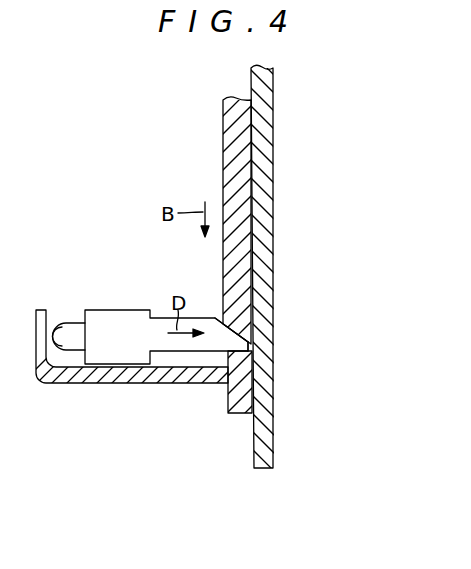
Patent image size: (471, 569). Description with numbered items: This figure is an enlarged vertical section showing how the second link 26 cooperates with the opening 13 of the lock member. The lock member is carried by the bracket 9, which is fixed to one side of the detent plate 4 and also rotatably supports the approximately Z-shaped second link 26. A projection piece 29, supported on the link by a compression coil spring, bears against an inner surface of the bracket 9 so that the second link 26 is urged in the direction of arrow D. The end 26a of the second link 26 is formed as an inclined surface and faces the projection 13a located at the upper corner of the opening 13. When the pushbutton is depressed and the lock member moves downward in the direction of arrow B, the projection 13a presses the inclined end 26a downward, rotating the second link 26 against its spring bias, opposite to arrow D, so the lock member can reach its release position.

The detent plate 4 is at (275, 236).
The opening 13 is at (222, 121).
The projection 13a is at (223, 317).
The bracket 9 is at (118, 383).
The second link 26 is at (138, 310).
The one end of the second link 26a is at (251, 335).
The projection piece 29 is at (68, 318).